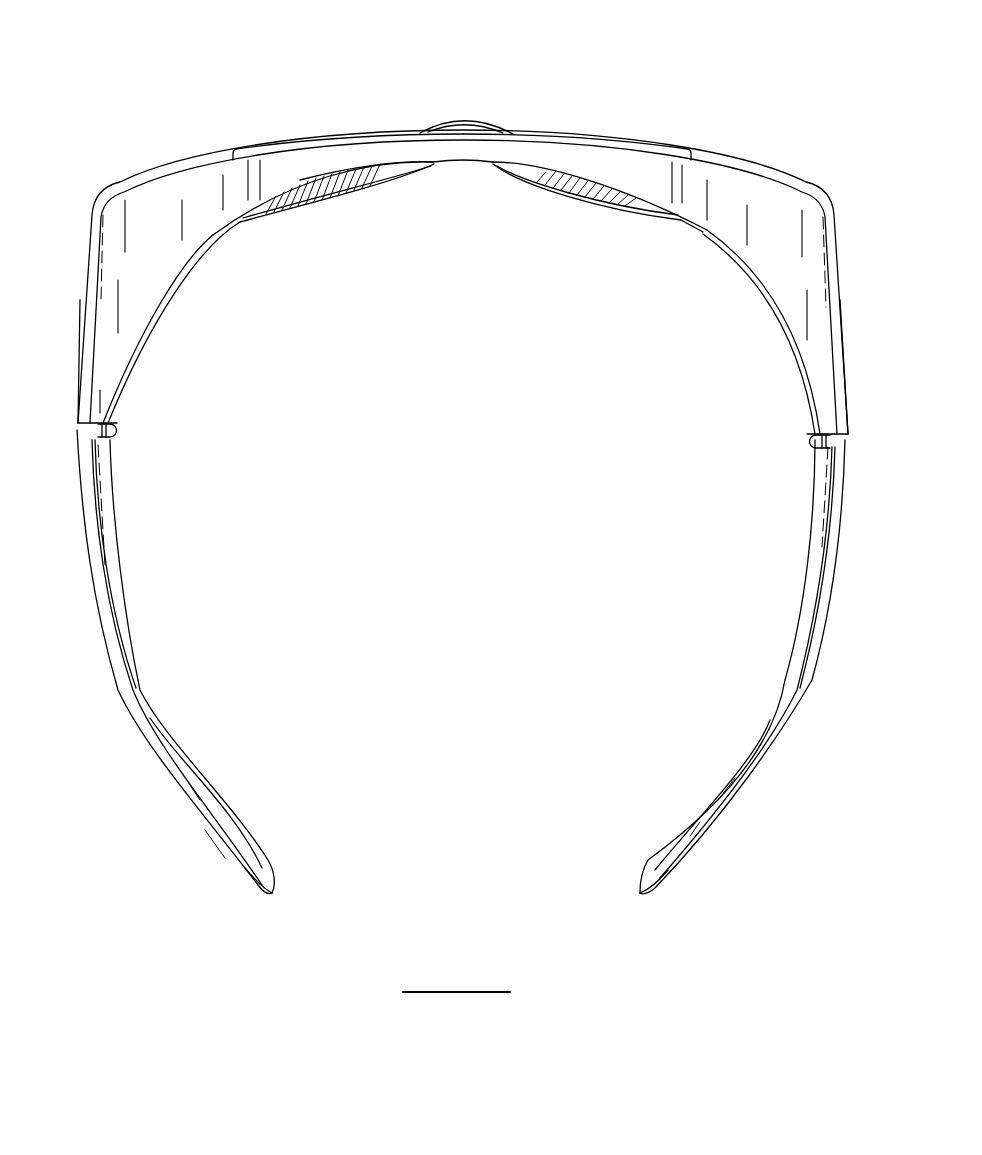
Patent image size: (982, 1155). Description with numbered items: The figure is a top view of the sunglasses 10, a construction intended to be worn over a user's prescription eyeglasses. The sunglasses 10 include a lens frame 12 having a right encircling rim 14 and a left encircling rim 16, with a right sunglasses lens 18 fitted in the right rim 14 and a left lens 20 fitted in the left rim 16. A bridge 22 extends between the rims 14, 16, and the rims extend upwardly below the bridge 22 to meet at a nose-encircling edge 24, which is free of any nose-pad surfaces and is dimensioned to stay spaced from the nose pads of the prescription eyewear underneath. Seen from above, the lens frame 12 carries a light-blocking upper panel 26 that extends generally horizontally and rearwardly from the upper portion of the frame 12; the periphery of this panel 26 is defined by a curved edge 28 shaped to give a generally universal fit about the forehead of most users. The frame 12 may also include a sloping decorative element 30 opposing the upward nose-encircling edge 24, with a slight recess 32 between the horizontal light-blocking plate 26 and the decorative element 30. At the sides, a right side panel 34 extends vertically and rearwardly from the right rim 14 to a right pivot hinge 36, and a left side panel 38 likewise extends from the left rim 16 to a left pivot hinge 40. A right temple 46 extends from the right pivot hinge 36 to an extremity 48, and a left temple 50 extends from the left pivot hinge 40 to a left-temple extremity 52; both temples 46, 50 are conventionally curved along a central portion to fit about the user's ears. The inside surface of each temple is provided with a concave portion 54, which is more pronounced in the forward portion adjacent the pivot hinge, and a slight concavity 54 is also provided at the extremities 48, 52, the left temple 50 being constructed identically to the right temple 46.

The sunglasses 10 is at (686, 66).
The lens frame 12 is at (188, 155).
The right encircling rim 14 is at (630, 218).
The left encircling rim 16 is at (290, 212).
The right sunglasses lens 18 is at (548, 185).
The left lens 20 is at (367, 185).
The bridge 22 is at (478, 128).
The nose-encircling edge 24 is at (433, 165).
The light-blocking upper panel 26 is at (167, 242).
The curved edge 28 is at (479, 163).
The sloping decorative element 30 is at (395, 133).
The recess 32 is at (302, 143).
The right side panel 34 is at (840, 302).
The right pivot hinge 36 is at (808, 437).
The left side panel 38 is at (85, 310).
The left pivot hinge 40 is at (115, 428).
The right temple 46 is at (820, 590).
The extremity 48 is at (660, 888).
The left temple 50 is at (110, 623).
The left-temple extremity 52 is at (270, 894).
The concave portion 54 is at (102, 488).